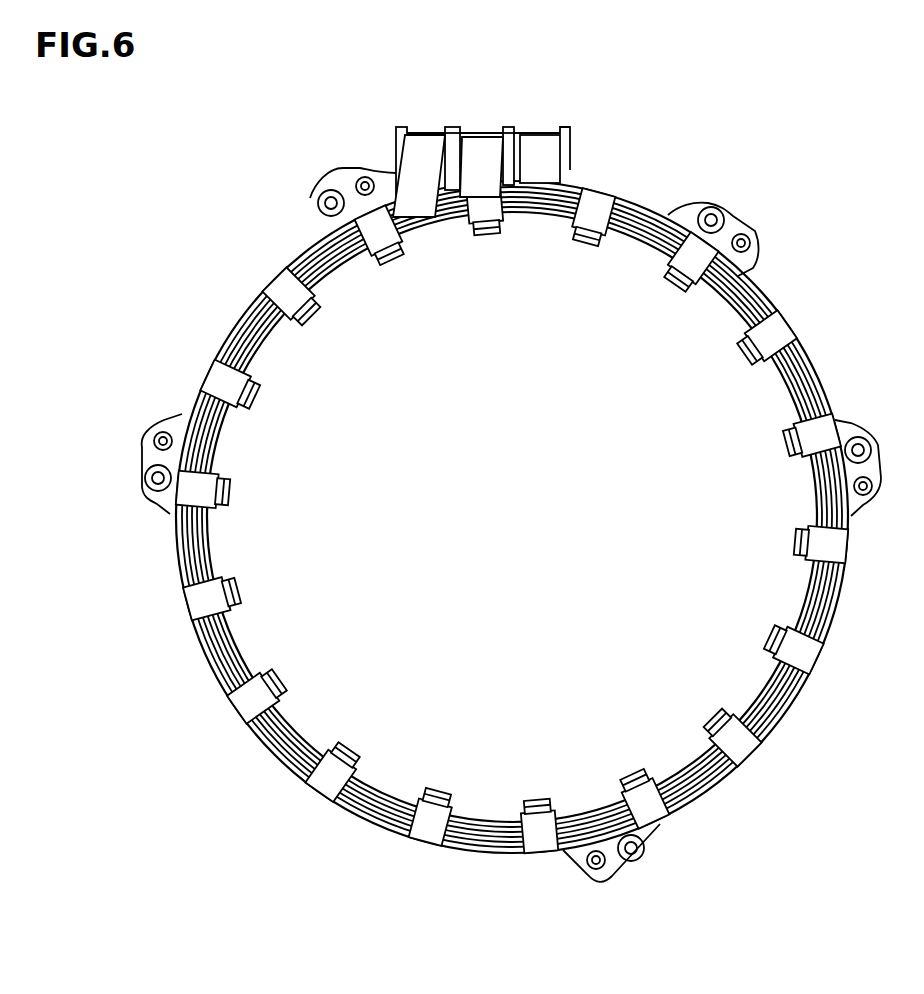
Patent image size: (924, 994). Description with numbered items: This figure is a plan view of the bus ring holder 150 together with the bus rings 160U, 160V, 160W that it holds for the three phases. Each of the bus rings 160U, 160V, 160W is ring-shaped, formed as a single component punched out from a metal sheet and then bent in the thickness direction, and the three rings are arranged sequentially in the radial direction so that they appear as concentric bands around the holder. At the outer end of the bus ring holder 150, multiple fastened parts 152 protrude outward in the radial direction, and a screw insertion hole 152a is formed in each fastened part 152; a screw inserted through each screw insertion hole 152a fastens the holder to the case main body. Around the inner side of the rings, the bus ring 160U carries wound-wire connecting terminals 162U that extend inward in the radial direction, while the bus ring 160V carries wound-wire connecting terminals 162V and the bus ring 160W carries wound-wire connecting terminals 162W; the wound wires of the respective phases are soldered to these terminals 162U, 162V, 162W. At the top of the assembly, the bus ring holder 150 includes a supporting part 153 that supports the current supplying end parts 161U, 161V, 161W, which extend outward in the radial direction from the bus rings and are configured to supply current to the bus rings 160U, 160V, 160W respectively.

The bus ring holder 150 is at (581, 156).
The fastened part 152 is at (740, 227).
The screw insertion hole 152a is at (718, 206).
The supporting part 153 is at (396, 152).
The bus ring 160U is at (596, 181).
The bus ring 160V is at (656, 210).
The bus ring 160W is at (626, 193).
The current supplying end part 161U is at (535, 140).
The current supplying end part 161V is at (423, 140).
The current supplying end part 161W is at (478, 138).
The wound-wire connecting terminal 162U is at (393, 256).
The wound-wire connecting terminal 162V is at (488, 231).
The wound-wire connecting terminal 162W is at (587, 240).